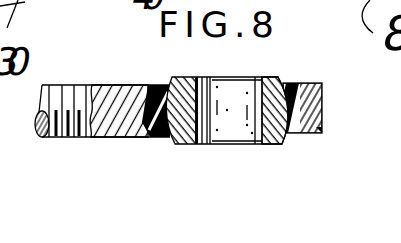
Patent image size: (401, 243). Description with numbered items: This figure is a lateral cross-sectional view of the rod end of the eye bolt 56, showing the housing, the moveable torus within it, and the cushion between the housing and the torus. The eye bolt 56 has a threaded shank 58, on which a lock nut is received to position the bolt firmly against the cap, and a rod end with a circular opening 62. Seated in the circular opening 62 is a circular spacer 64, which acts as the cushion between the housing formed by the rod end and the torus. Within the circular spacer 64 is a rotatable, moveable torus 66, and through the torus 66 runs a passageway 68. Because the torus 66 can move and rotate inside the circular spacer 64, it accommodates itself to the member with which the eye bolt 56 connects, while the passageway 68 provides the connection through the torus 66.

The eye bolt 56 is at (352, 88).
The threaded shank 58 is at (25, 174).
The circular opening 62 is at (118, 181).
The circular spacer 64 is at (182, 207).
The torus 66 is at (293, 172).
The passageway 68 is at (258, 208).